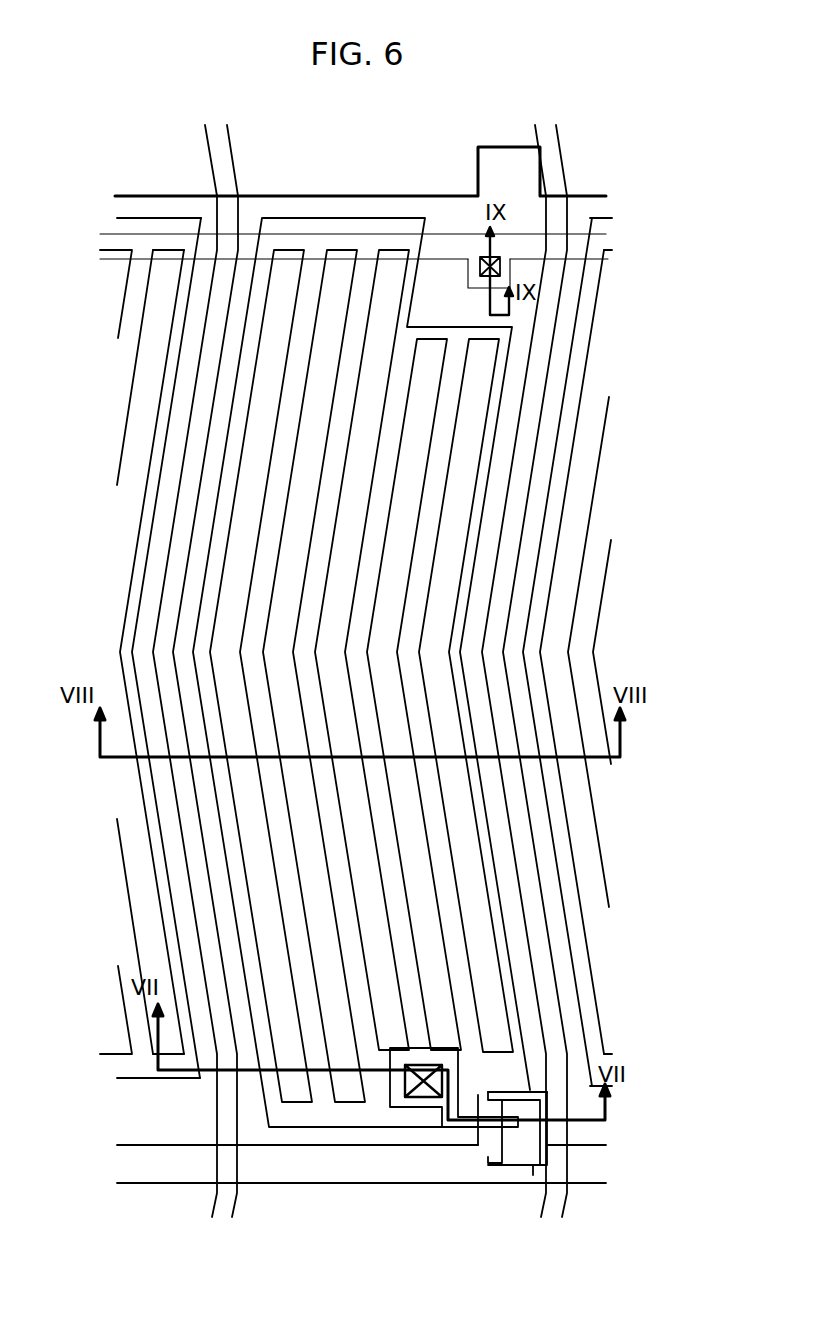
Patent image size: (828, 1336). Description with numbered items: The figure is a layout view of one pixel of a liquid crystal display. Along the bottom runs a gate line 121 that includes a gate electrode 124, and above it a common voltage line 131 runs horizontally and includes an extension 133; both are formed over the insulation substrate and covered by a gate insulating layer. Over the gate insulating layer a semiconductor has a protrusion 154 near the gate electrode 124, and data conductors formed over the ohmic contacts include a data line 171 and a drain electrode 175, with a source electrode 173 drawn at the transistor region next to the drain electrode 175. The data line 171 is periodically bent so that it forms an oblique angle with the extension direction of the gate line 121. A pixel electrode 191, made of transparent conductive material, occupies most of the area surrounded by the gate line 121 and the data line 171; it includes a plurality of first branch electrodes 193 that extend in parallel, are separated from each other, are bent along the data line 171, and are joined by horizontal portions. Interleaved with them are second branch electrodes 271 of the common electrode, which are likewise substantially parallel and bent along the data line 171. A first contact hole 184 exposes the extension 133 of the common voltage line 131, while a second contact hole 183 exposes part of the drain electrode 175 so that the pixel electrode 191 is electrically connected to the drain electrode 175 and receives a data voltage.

The gate line 121 is at (140, 1147).
The gate electrode 124 is at (548, 1128).
The common voltage line 131 is at (600, 263).
The extension 133 is at (515, 268).
The protrusion 154 is at (533, 1165).
The data line 171 is at (206, 435).
The source electrode 173 is at (540, 1172).
The drain electrode 175 is at (480, 1130).
The second contact hole 183 is at (420, 1098).
The first contact hole 184 is at (480, 256).
The pixel electrode 191 is at (304, 218).
The first branch electrode 193 is at (248, 596).
The second branch electrode 271 is at (443, 365).